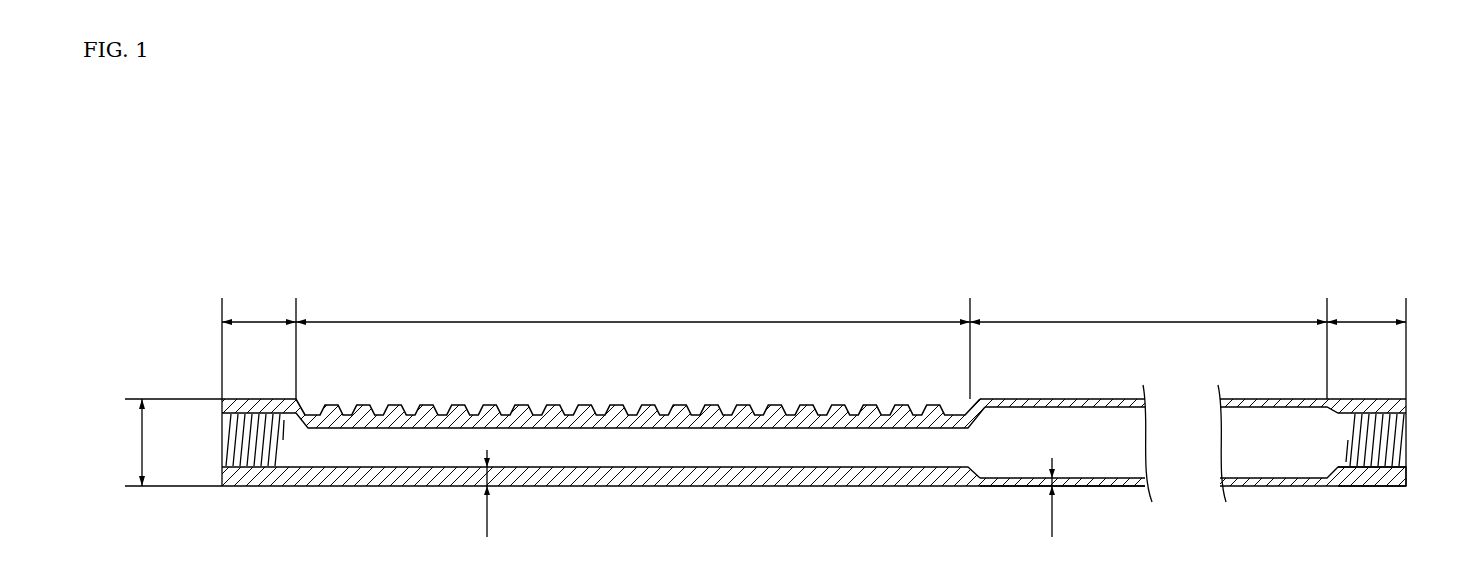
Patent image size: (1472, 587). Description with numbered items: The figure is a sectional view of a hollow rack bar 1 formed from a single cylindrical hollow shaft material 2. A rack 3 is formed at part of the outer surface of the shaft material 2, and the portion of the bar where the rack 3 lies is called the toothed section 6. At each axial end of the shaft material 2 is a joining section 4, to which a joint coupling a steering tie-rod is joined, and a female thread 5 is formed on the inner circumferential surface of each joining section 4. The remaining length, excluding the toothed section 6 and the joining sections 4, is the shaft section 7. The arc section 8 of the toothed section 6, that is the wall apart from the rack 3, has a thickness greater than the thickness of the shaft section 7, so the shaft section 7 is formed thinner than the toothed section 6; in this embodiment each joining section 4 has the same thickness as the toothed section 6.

The hollow rack bar 1 is at (262, 96).
The shaft material 2 is at (1400, 497).
The rack 3 is at (696, 415).
The joining section 4 is at (814, 341).
The female thread 5 is at (243, 415).
The toothed section 6 is at (633, 341).
The shaft section 7 is at (1148, 304).
The arc section 8 is at (698, 487).